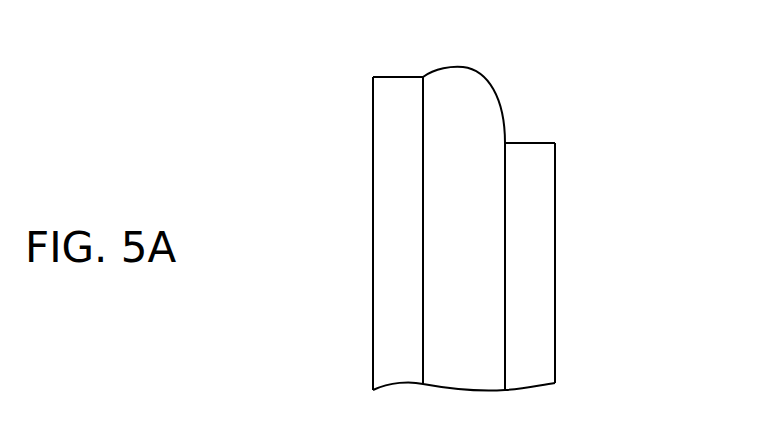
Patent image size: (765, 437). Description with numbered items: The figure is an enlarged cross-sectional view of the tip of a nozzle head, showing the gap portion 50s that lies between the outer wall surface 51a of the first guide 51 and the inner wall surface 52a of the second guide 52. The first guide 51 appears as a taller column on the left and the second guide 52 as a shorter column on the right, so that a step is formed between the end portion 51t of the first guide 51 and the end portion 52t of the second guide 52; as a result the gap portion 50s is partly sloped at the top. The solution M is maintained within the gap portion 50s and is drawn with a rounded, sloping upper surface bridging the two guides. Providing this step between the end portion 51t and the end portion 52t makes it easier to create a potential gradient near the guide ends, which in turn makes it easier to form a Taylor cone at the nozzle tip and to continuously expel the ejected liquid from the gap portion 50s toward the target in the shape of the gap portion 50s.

The first guide 51 is at (392, 322).
The second guide 52 is at (530, 344).
The solution M is at (493, 84).
The gap portion 50s is at (483, 278).
The outer wall surface of the first guide 51a is at (434, 176).
The inner wall surface of the second guide 52a is at (495, 176).
The end portion of the first guide 51t is at (398, 77).
The end portion of the second guide 52t is at (538, 145).